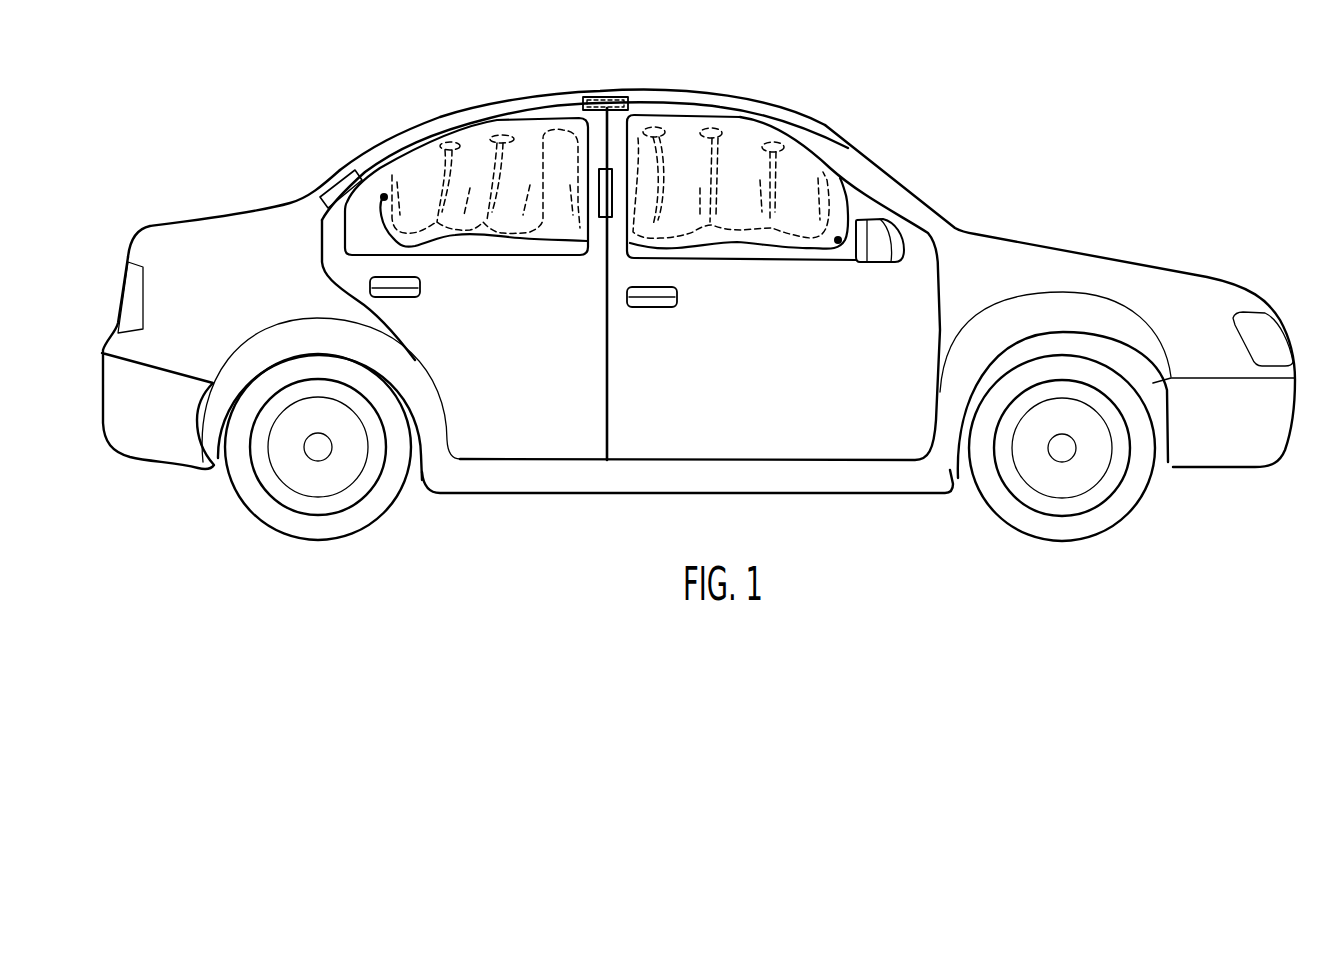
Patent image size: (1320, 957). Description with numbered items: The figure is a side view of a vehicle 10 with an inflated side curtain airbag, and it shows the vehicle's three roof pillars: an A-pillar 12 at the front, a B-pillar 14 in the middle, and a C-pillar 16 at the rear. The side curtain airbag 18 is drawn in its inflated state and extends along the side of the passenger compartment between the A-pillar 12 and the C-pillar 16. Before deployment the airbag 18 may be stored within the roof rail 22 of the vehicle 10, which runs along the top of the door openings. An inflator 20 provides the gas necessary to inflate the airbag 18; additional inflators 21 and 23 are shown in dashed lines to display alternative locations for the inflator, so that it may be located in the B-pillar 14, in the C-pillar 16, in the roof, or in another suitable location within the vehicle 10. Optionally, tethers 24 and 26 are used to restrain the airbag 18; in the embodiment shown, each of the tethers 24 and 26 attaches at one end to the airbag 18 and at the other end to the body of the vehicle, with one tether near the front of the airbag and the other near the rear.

The vehicle 10 is at (946, 108).
The A-pillar 12 is at (903, 202).
The B-pillar 14 is at (612, 142).
The C-pillar 16 is at (405, 129).
The side curtain airbag 18 is at (738, 160).
The inflator 20 is at (598, 185).
The inflator 21 is at (597, 97).
The roof rail 22 is at (672, 107).
The inflator 23 is at (347, 160).
The tether 24 is at (838, 240).
The tether 26 is at (383, 195).